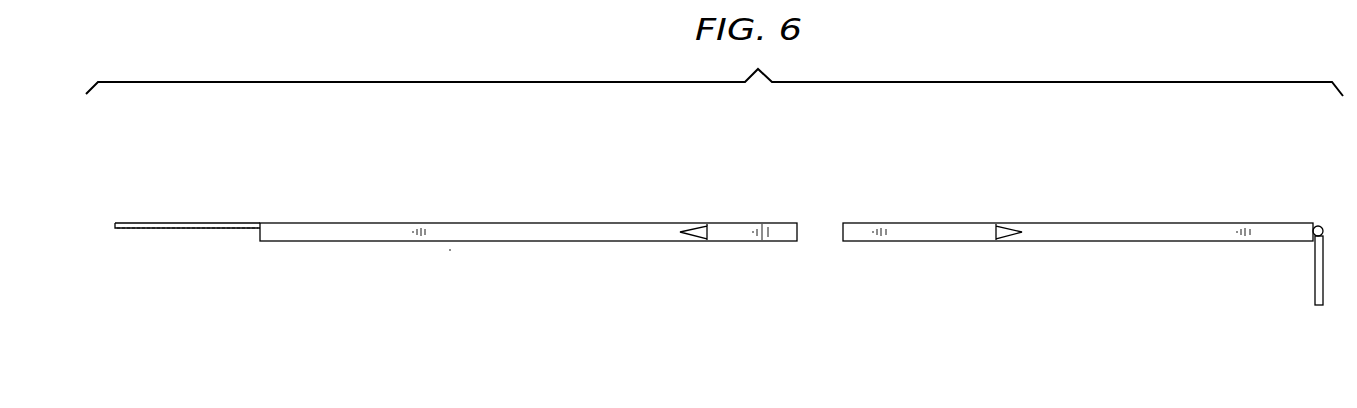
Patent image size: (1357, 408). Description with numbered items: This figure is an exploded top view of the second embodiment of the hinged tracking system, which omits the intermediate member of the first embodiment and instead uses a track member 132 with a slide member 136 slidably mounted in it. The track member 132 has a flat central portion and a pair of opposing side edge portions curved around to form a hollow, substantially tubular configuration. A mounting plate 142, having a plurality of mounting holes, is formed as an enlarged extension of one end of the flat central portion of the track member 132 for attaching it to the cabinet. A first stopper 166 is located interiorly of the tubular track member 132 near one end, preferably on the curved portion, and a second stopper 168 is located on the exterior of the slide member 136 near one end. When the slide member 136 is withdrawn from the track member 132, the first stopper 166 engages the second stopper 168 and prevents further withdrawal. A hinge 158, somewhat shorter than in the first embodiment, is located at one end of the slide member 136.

The mounting plate 142 is at (175, 222).
The track member 132 is at (455, 232).
The first stopper 166 is at (698, 235).
The slide member 136 is at (1095, 232).
The second stopper 168 is at (1005, 235).
The hinge 158 is at (1316, 226).